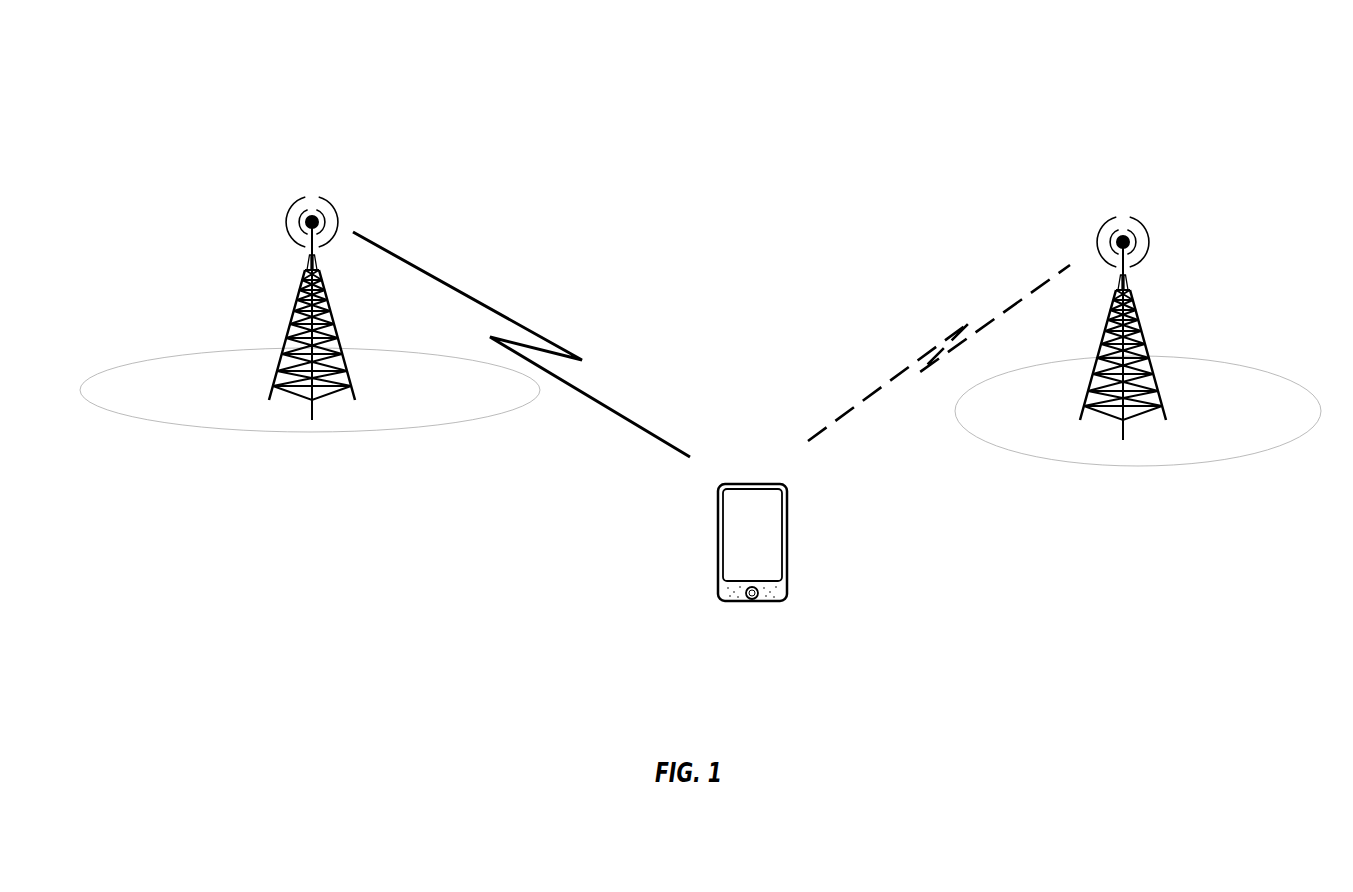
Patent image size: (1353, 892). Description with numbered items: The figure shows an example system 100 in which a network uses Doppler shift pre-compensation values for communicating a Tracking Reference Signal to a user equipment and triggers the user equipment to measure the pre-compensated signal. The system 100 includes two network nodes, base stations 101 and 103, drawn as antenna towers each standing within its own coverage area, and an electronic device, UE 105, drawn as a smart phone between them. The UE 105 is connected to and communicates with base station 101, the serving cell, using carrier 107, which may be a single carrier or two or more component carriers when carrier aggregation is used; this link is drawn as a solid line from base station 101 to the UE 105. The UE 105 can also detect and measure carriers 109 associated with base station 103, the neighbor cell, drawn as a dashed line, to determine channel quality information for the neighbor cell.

The system 100 is at (1054, 106).
The network node 101 is at (298, 308).
The network node 103 is at (1137, 327).
The electronic device 105 is at (787, 498).
The carrier 107 is at (521, 344).
The carrier 109 is at (939, 353).